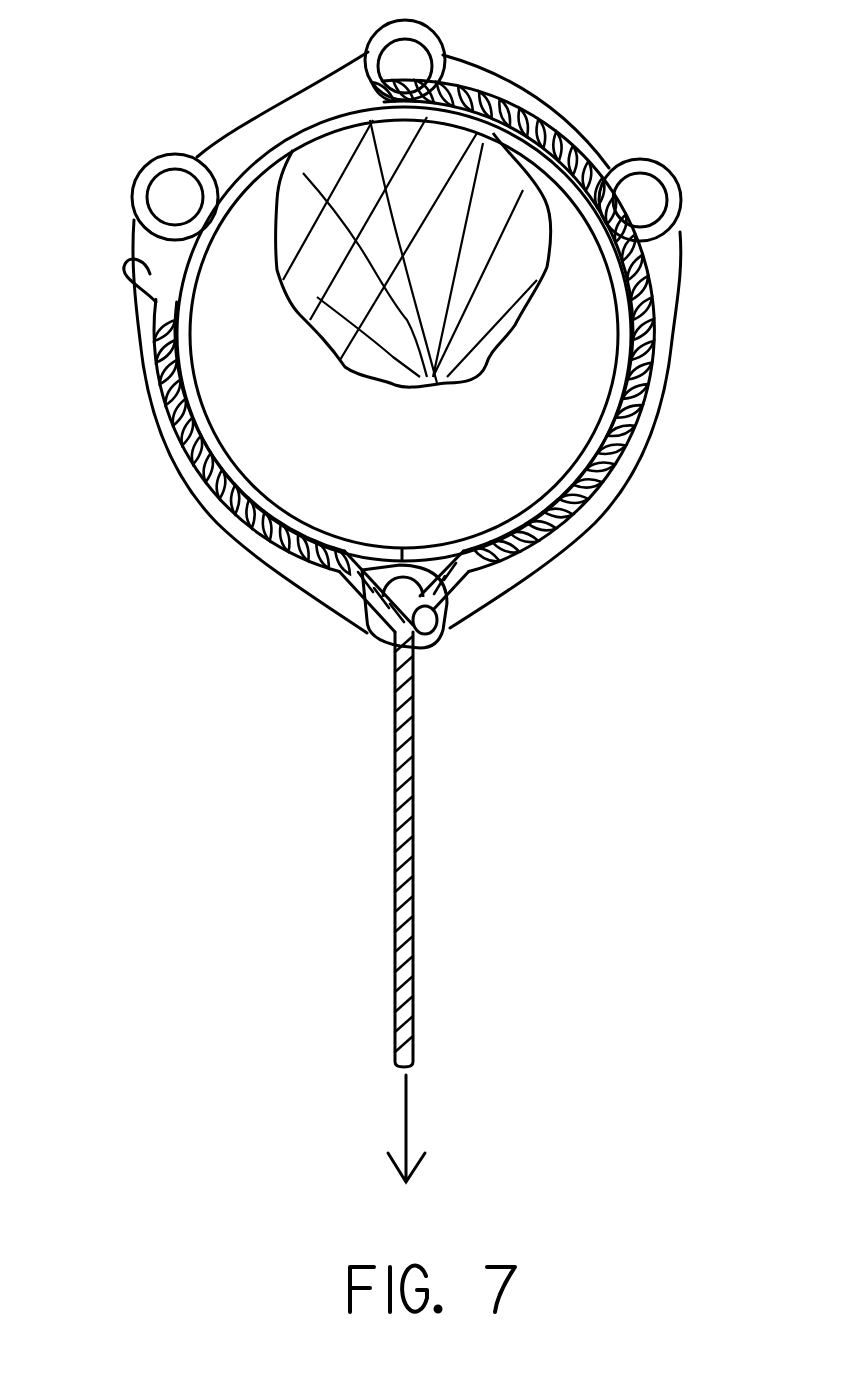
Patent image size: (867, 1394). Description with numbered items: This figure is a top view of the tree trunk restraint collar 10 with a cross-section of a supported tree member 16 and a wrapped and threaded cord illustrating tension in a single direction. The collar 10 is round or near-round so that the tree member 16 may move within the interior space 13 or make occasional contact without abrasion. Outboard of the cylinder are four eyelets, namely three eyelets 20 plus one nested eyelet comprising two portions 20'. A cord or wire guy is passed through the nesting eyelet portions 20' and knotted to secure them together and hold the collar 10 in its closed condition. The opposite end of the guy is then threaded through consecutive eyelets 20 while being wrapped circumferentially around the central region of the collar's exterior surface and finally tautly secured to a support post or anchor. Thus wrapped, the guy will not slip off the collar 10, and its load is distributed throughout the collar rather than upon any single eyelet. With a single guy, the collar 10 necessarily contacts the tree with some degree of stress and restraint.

The collar 10 is at (168, 122).
The interior space 13 is at (588, 415).
The tree member 16 is at (324, 150).
The eyelets 20 is at (684, 194).
The nested eyelet portions 20' is at (376, 645).